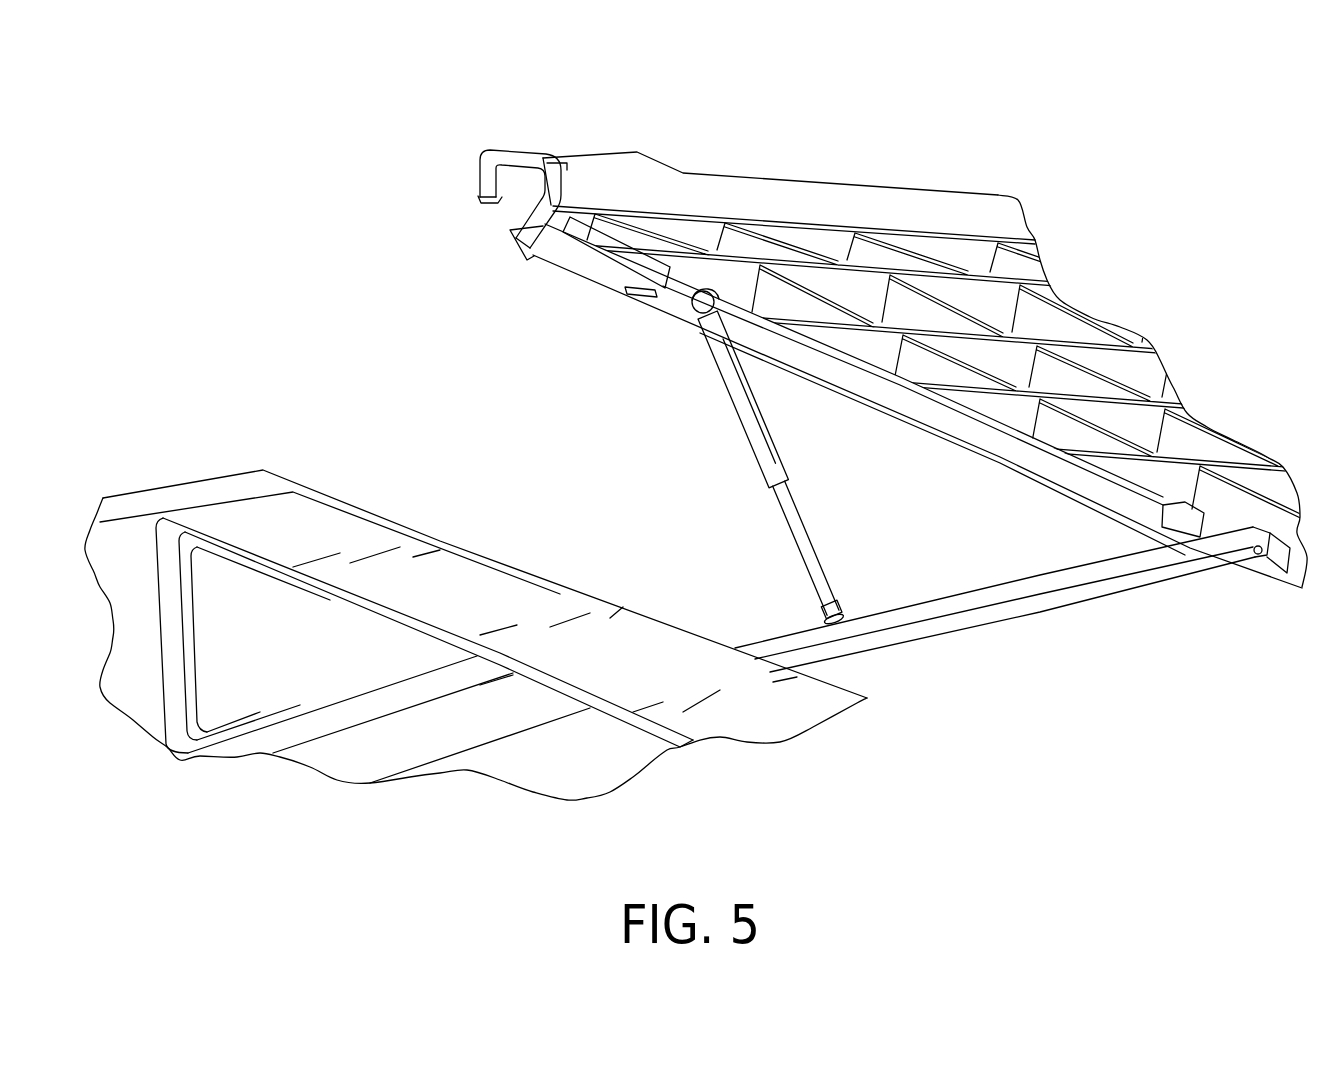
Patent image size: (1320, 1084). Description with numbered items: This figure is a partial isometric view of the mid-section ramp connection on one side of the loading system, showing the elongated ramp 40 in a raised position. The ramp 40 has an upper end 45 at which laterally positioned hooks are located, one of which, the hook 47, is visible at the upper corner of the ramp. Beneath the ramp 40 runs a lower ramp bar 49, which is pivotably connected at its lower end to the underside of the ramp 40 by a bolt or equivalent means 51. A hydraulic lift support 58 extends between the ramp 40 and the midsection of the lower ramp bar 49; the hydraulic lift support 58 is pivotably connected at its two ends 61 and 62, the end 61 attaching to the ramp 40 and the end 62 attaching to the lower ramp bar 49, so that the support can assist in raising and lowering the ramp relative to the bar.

The elongated ramp 40 is at (1103, 377).
The upper end 45 is at (852, 203).
The hook 47 is at (492, 174).
The lower ramp bar 49 is at (1030, 607).
The bolt or equivalent means 51 is at (1258, 554).
The hydraulic lift support 58 is at (735, 400).
The end of hydraulic lift support 61 is at (694, 304).
The end of hydraulic lift support 62 is at (824, 624).